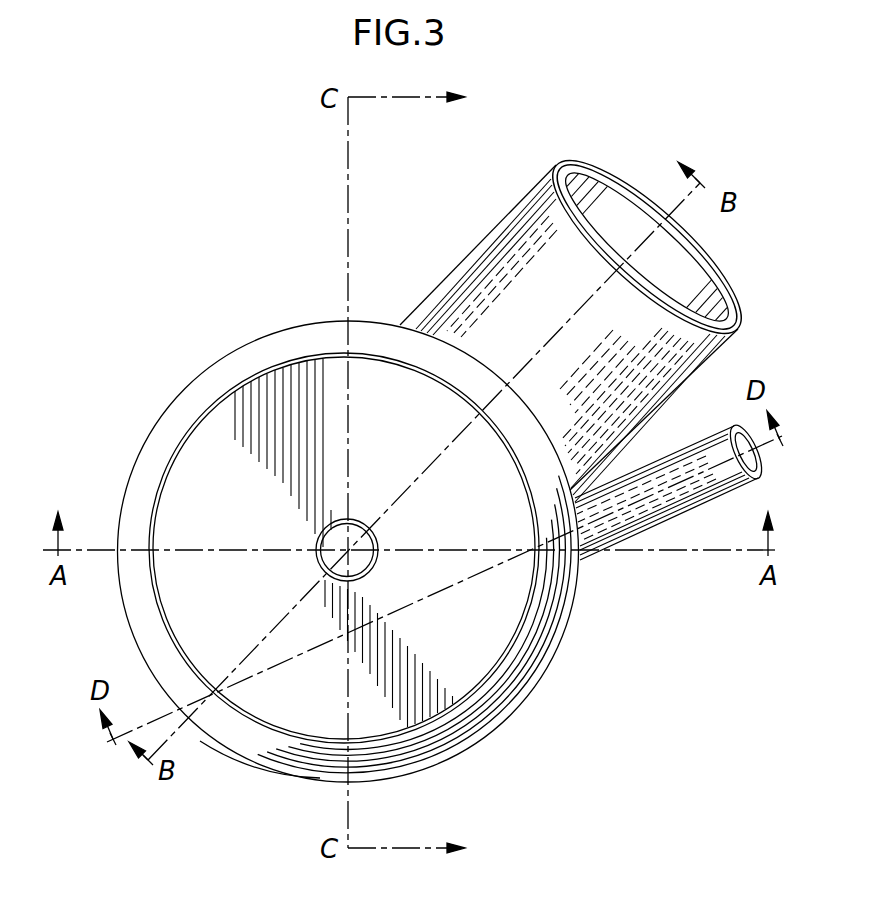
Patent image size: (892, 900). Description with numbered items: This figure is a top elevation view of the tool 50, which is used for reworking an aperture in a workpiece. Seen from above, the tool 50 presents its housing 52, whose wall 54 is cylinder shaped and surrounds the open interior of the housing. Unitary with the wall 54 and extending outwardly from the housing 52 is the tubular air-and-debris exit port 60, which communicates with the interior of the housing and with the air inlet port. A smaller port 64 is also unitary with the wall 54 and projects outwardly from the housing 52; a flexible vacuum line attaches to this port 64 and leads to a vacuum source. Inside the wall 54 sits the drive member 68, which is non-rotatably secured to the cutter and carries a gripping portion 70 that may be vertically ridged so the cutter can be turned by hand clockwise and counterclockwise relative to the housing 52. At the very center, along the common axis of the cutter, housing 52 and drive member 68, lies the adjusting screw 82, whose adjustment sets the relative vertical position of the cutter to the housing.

The tool 50 is at (208, 338).
The housing 52 is at (566, 688).
The wall 54 is at (267, 763).
The air-and-debris exit port 60 is at (722, 282).
The port 64 is at (730, 494).
The drive member 68 is at (315, 328).
The gripping portion 70 is at (168, 405).
The adjusting screw 82 is at (362, 521).